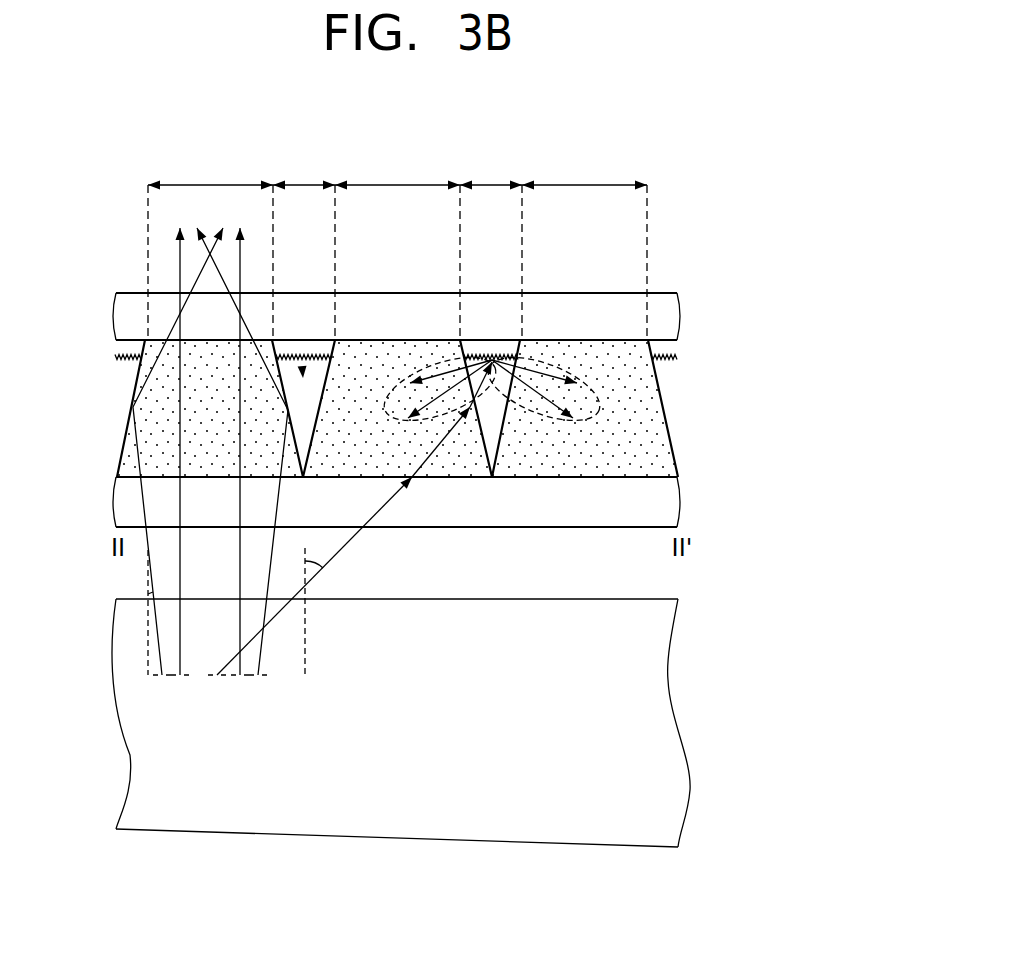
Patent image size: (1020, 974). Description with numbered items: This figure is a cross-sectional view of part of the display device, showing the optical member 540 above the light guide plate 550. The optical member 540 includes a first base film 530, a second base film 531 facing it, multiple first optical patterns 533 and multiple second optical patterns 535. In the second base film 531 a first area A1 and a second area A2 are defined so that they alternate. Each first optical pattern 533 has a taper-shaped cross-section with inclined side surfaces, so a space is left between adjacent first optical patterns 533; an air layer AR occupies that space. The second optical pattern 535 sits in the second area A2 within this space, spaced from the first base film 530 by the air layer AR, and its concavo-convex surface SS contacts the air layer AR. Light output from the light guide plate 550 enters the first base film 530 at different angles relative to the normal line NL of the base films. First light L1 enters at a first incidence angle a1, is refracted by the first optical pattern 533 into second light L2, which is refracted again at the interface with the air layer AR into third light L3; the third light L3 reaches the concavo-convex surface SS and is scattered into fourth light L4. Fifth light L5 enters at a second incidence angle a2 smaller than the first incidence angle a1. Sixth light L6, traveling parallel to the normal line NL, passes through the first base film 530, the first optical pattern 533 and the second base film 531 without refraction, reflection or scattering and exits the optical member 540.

The first base film 530 is at (439, 502).
The second base film 531 is at (668, 319).
The first optical pattern 533 is at (645, 409).
The second optical pattern 535 is at (668, 351).
The optical member 540 is at (472, 410).
The light guide plate 550 is at (667, 733).
The first area A1 is at (397, 250).
The second area A2 is at (397, 250).
The air layer AR is at (302, 368).
The concavo-convex surface SS is at (484, 354).
The first light L1 is at (392, 497).
The second light L2 is at (442, 450).
The third light L3 is at (495, 372).
The fourth light L4 is at (428, 358).
The fifth light L5 is at (145, 498).
The sixth light L6 is at (181, 652).
The normal line NL is at (148, 638).
The first incidence angle a1 is at (320, 551).
The second incidence angle a2 is at (148, 591).